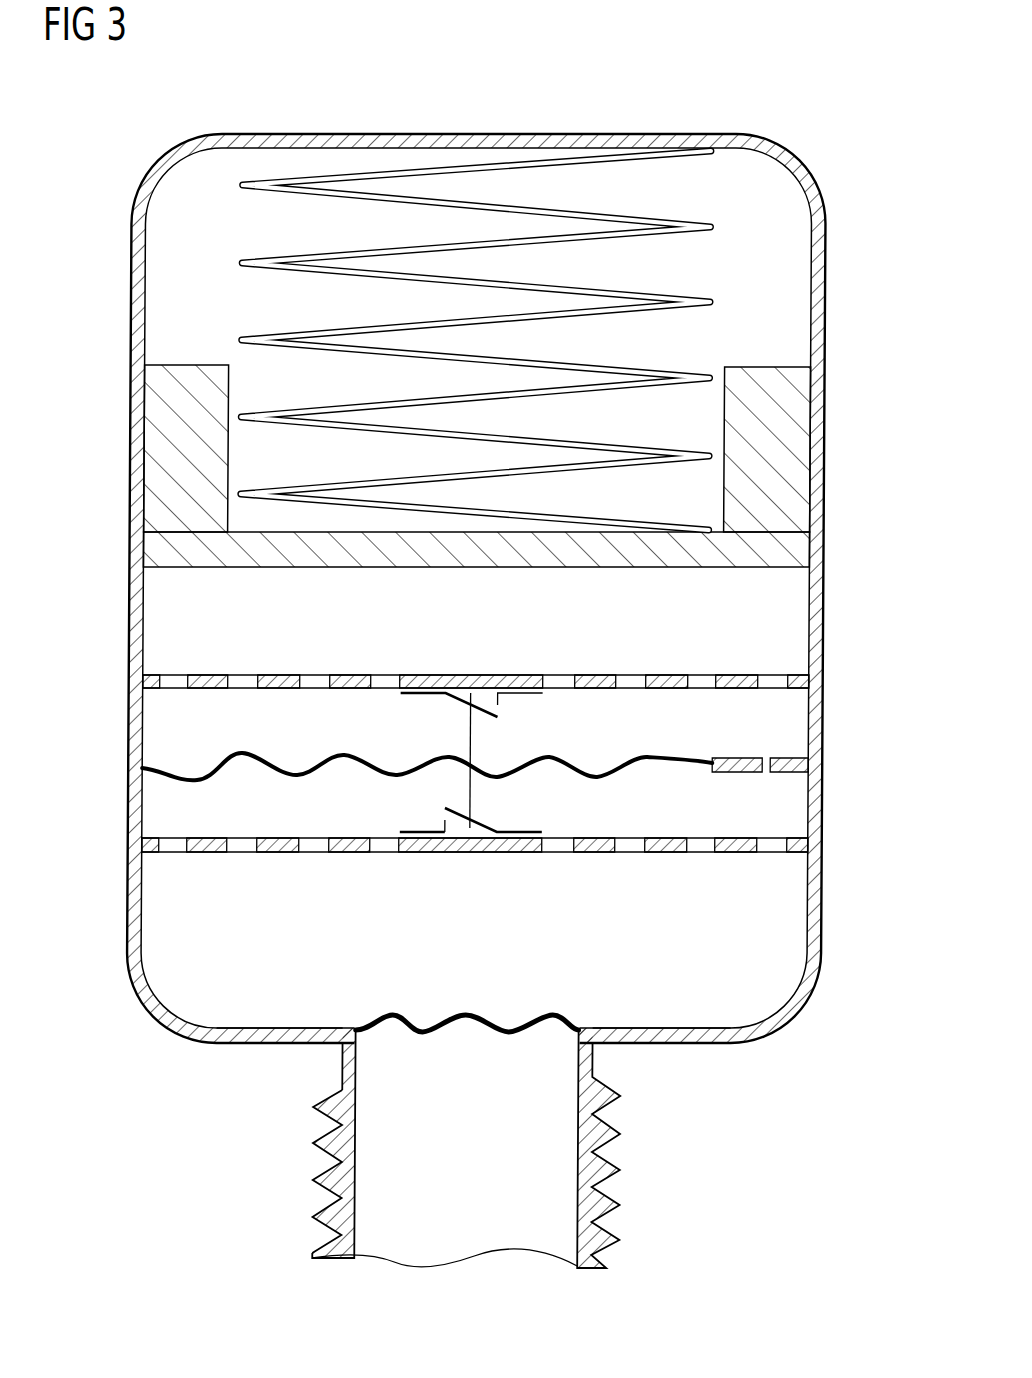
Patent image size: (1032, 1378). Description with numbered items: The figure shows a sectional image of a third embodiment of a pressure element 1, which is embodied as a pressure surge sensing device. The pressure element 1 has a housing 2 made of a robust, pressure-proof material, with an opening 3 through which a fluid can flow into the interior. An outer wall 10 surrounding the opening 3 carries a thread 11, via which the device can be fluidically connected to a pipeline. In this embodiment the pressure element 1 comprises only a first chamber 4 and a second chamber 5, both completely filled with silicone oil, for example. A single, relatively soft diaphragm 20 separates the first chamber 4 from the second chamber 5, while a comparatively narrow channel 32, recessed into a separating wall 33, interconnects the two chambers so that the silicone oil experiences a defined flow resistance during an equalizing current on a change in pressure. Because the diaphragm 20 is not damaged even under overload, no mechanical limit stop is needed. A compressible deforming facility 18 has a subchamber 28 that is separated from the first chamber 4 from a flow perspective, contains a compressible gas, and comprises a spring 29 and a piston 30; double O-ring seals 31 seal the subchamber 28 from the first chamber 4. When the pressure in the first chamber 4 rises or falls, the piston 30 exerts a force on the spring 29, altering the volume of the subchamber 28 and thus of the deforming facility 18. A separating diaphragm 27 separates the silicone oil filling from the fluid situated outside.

The pressure element 1 is at (712, 72).
The housing 2 is at (278, 134).
The opening 3 is at (488, 1240).
The first chamber 4 is at (790, 633).
The second chamber 5 is at (245, 1012).
The outer wall 10 is at (476, 1148).
The thread 11 is at (340, 1185).
The compressible deforming facility 18 is at (155, 403).
The diaphragm 20 is at (160, 770).
The separating diaphragm 27 is at (466, 1025).
The subchamber 28 is at (790, 285).
The spring 29 is at (715, 227).
The piston 30 is at (572, 556).
The double O-ring seals 31 is at (790, 413).
The channel 32 is at (767, 781).
The separating wall 33 is at (790, 727).